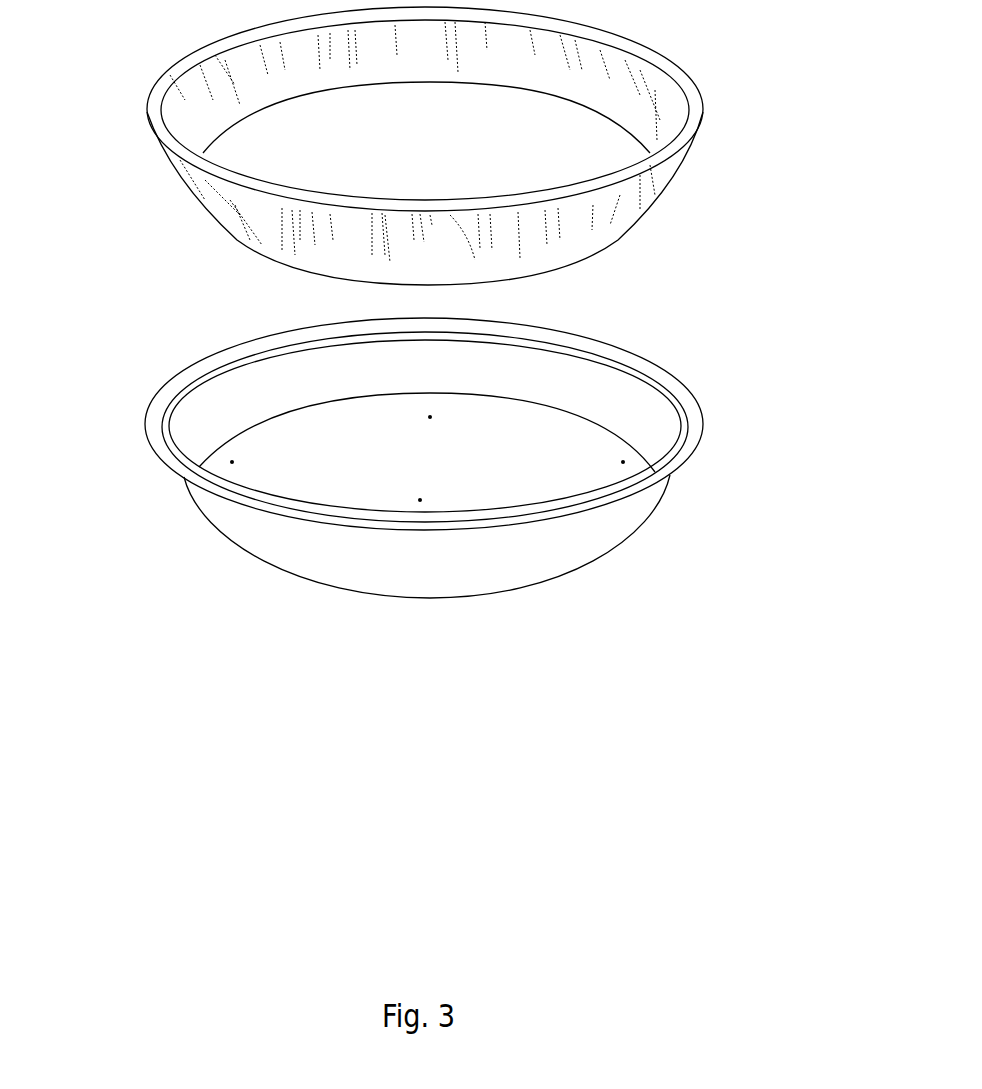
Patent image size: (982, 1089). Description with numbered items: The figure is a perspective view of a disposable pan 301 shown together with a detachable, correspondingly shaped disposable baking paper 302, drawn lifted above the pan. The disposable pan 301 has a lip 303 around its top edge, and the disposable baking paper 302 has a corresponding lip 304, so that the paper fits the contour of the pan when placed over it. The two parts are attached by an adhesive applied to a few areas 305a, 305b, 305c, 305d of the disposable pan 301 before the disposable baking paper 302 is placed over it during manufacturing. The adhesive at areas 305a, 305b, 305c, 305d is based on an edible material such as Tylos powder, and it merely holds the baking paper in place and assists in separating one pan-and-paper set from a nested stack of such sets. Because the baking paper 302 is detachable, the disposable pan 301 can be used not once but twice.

The disposable pan 301 is at (431, 473).
The disposable baking paper 302 is at (490, 146).
The lip 303 is at (603, 494).
The lip 304 is at (690, 125).
The adhesive area 305a is at (623, 462).
The adhesive area 305b is at (430, 417).
The adhesive area 305c is at (232, 462).
The adhesive area 305d is at (420, 500).